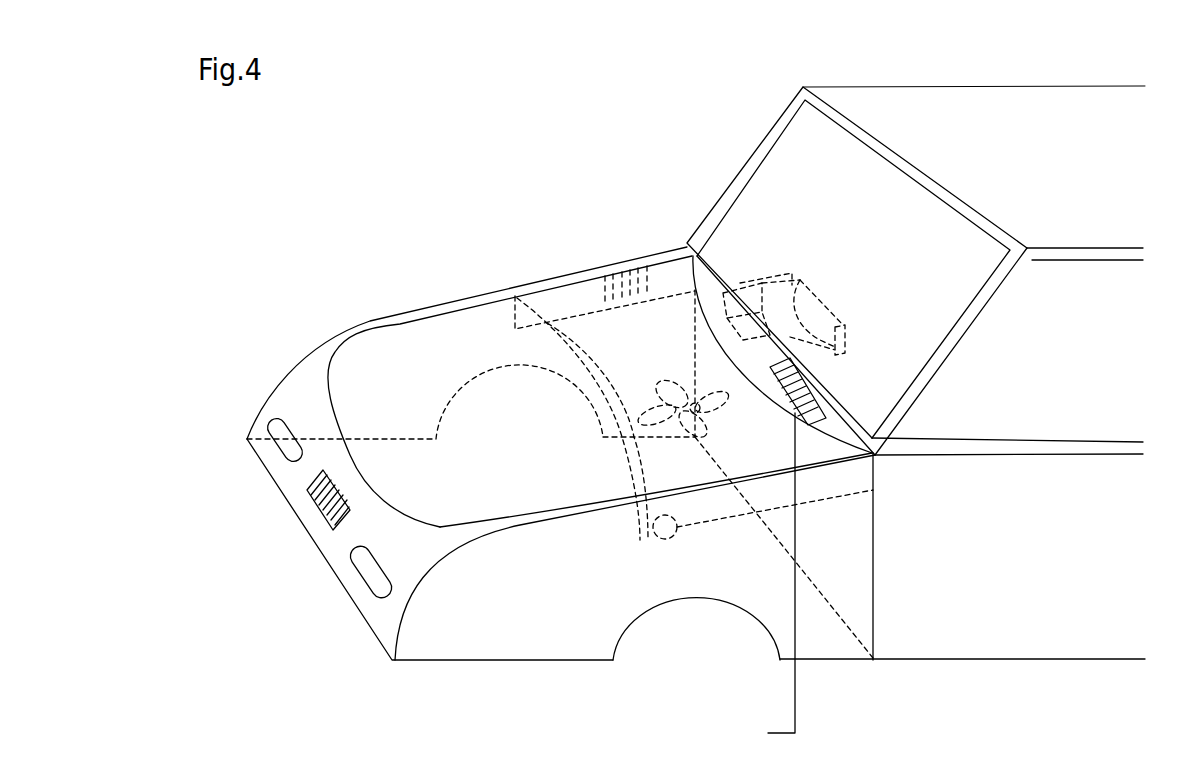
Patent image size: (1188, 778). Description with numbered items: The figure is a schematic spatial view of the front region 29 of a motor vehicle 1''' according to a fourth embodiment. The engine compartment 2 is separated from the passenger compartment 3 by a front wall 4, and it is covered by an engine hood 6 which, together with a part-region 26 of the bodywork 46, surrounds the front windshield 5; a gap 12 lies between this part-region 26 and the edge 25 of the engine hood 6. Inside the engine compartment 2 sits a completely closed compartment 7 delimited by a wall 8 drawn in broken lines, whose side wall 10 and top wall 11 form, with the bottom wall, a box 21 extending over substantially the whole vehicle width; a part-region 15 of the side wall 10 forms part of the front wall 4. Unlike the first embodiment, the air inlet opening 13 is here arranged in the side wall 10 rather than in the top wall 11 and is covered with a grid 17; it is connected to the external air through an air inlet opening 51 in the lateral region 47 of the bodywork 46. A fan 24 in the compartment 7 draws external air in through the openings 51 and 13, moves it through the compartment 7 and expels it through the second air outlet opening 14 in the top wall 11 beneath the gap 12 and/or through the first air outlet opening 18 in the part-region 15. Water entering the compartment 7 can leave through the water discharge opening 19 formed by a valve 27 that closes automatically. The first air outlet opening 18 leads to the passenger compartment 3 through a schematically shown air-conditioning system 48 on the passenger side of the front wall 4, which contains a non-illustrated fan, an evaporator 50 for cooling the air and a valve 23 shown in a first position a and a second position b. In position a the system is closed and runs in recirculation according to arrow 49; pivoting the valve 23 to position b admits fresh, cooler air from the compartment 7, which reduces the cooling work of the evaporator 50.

The motor vehicle 1''' is at (372, 96).
The engine compartment 2 is at (398, 402).
The passenger compartment 3 is at (818, 150).
The front wall 4 is at (853, 605).
The front windshield 5 is at (752, 193).
The engine hood 6 is at (767, 440).
The compartment 7 is at (602, 327).
The wall 8 is at (652, 507).
The side wall 10 is at (527, 320).
The top wall 11 is at (665, 327).
The gap 12 is at (878, 456).
The air inlet opening 13 is at (602, 285).
The second air outlet opening 14 is at (830, 397).
The part-region of side wall 15 is at (875, 455).
The grid 17 is at (643, 277).
The first air outlet opening 18 is at (728, 281).
The water discharge opening 19 is at (667, 540).
The box 21 is at (717, 523).
The valve 23 is at (762, 282).
The fan 24 is at (658, 383).
The edge of engine hood 25 is at (780, 573).
The part-region of bodywork 26 is at (880, 447).
The valve 27 is at (665, 522).
The front region 29 is at (387, 620).
The bodywork 46 is at (770, 143).
The lateral region 47 is at (570, 302).
The air-conditioning system 48 is at (857, 340).
The arrow 49 is at (850, 328).
The evaporator 50 is at (845, 350).
The air inlet opening in lateral region 51 is at (620, 278).
The first position a is at (830, 313).
The second position b is at (797, 283).